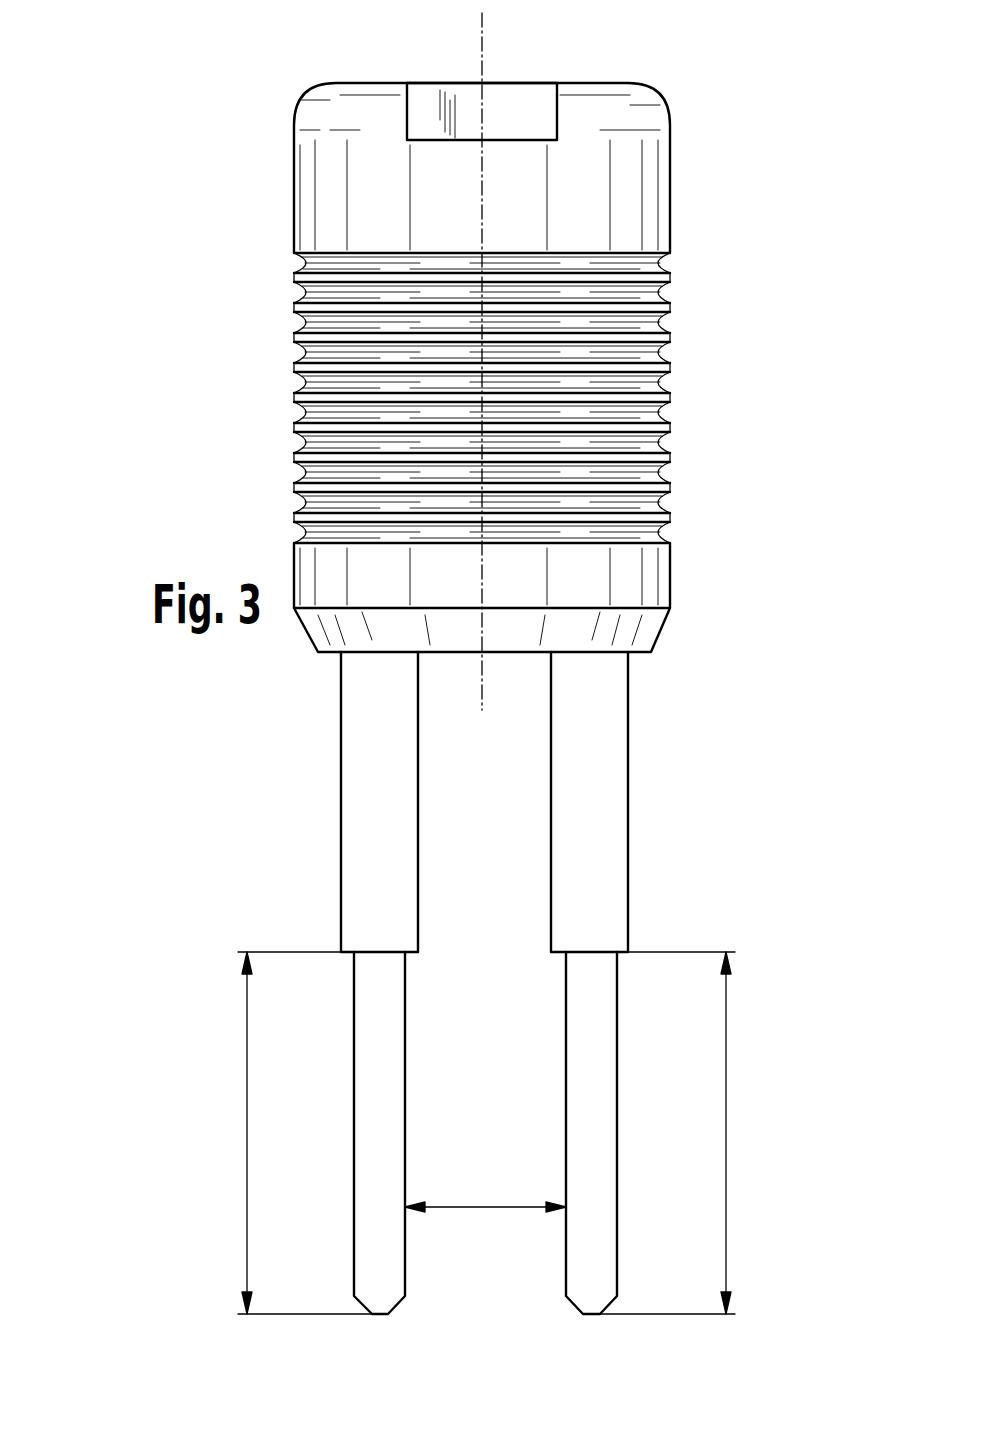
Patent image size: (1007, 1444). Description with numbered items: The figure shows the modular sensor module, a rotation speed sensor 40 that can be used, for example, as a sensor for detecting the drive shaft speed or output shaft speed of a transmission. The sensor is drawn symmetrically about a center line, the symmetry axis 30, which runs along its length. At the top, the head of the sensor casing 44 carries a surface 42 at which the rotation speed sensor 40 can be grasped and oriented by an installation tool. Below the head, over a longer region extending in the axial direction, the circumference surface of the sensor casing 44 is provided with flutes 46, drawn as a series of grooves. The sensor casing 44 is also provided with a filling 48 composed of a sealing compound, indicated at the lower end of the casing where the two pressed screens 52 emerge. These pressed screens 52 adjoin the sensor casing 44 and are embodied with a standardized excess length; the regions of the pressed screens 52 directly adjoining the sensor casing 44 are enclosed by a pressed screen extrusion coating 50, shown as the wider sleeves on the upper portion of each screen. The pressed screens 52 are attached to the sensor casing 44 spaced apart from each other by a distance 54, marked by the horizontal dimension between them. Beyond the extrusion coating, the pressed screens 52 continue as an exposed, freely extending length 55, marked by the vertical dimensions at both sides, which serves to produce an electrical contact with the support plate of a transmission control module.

The symmetry axis 30 is at (482, 20).
The rotation speed sensor 40 is at (460, 390).
The surface 42 is at (423, 113).
The sensor casing 44 is at (632, 219).
The flutes 46 is at (297, 382).
The filling 48 is at (445, 652).
The pressed screen extrusion coating 50 is at (603, 810).
The pressed screens 52 is at (595, 1098).
The distance 54 is at (478, 1205).
The freely extending length 55 is at (727, 1138).